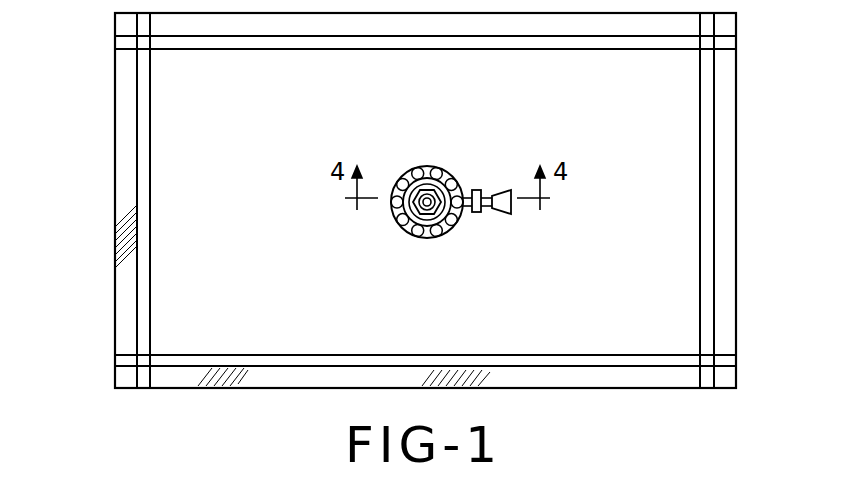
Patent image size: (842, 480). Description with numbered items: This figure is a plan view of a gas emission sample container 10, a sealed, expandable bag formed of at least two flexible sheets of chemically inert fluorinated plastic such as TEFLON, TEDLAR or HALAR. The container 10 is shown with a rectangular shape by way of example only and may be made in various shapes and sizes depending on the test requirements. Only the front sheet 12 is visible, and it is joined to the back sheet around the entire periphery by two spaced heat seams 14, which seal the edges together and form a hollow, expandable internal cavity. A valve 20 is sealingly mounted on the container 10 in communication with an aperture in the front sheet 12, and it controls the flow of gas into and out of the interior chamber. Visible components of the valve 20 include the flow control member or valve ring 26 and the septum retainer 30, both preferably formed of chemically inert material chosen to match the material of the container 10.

The gas sample container 10 is at (114, 108).
The front sheet 12 is at (165, 170).
The heat seams 14 is at (150, 303).
The valve 20 is at (460, 166).
The valve ring 26 is at (398, 183).
The septum retainer 30 is at (428, 191).